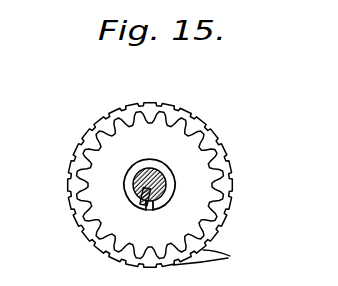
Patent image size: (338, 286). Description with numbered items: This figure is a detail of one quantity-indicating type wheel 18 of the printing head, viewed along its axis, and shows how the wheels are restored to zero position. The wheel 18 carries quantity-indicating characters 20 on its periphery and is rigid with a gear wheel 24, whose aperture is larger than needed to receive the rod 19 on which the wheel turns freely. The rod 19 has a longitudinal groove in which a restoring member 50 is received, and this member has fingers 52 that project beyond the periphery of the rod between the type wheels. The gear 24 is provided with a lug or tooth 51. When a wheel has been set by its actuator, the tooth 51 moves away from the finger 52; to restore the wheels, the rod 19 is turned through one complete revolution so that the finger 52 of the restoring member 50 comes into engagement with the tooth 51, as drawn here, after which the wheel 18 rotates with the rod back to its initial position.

The quantity-indicating type wheel 18 is at (223, 152).
The rod 19 is at (262, 167).
The characters 20 is at (214, 256).
The gear wheel 24 is at (211, 218).
The restoring member 50 is at (174, 181).
The lug or tooth 51 is at (143, 209).
The finger 52 is at (138, 206).